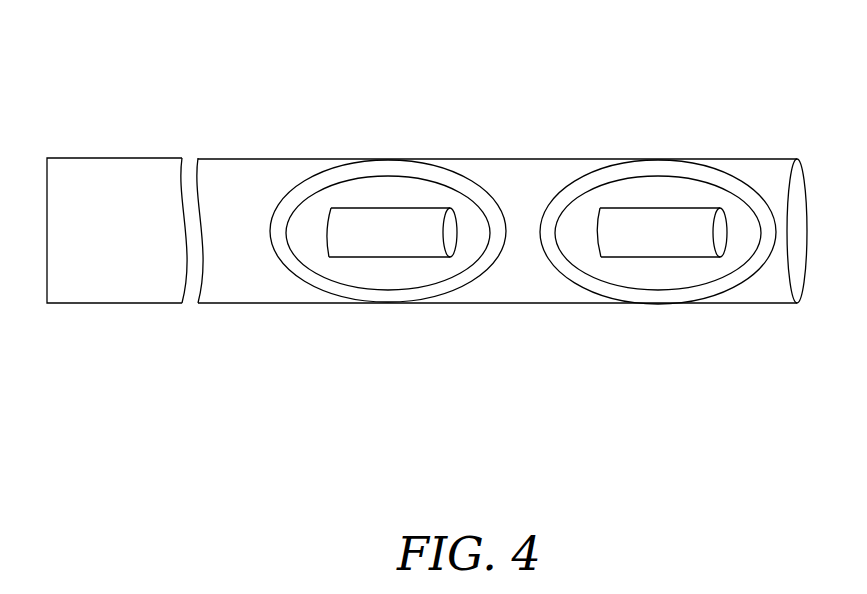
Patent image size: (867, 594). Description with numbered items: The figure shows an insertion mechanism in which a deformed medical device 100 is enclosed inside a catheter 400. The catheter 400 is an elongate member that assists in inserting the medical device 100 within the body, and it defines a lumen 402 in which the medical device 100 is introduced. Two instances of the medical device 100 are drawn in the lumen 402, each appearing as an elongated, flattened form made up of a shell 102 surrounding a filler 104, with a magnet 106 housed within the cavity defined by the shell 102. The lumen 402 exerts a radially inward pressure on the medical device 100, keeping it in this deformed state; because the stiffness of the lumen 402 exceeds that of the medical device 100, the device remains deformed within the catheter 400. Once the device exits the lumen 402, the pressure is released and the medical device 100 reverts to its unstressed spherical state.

The catheter 400 is at (80, 156).
The lumen 402 is at (513, 268).
The medical device 100 is at (602, 161).
The shell 102 is at (299, 181).
The filler 104 is at (373, 196).
The magnet 106 is at (369, 260).